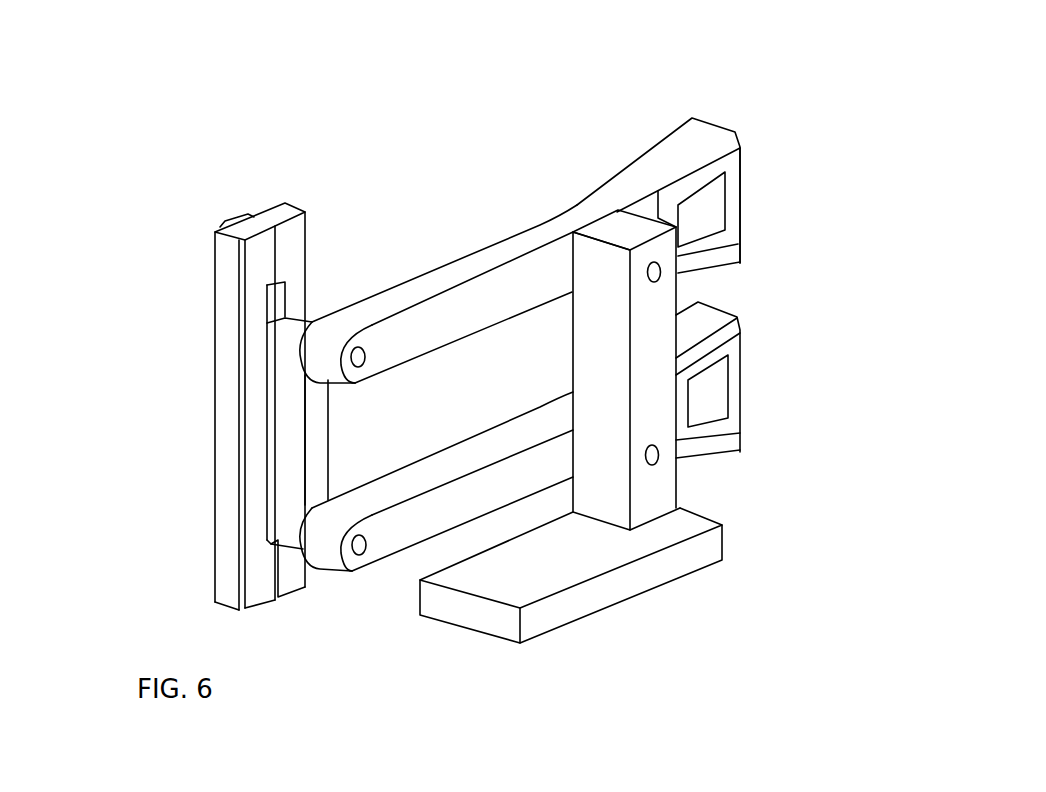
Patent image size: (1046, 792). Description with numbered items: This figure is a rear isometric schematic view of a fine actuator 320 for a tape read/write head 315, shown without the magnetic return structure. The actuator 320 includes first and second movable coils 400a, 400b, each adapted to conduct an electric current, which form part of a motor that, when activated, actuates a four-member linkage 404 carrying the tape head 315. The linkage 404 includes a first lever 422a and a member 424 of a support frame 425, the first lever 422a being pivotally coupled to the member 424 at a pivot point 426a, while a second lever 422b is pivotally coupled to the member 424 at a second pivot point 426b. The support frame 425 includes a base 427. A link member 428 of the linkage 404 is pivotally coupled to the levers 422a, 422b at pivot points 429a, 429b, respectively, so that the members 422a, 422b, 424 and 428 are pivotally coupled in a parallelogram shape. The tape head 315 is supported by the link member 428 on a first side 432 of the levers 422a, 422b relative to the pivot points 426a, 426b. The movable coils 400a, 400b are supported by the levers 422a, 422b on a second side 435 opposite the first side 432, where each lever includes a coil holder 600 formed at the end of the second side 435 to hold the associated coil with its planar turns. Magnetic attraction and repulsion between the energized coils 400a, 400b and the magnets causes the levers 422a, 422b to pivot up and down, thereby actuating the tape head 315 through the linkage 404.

The fine actuator 320 is at (118, 192).
The tape read/write head 315 is at (227, 604).
The 4-member linkage 404 is at (495, 243).
The first lever 422a is at (572, 206).
The second lever 422b is at (458, 447).
The member of support frame 424 is at (680, 292).
The support frame 425 is at (563, 358).
The first pivot point 426a is at (647, 272).
The second pivot point 426b is at (653, 465).
The base 427 is at (688, 563).
The link member 428 is at (318, 413).
The pivot point 429a is at (359, 348).
The pivot point 429b is at (360, 557).
The first side of levers 432 is at (430, 297).
The second side of levers 435 is at (713, 124).
The first movable coil 400a is at (737, 212).
The second movable coil 400b is at (735, 358).
The coil holder 600 is at (737, 255).